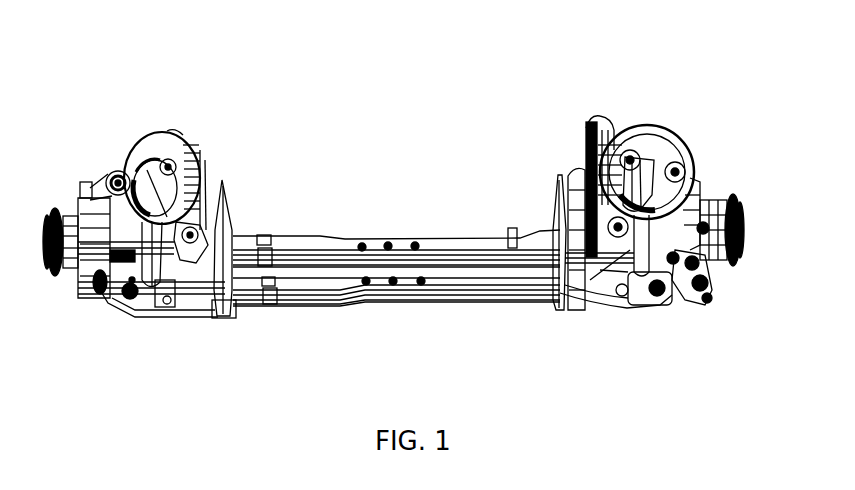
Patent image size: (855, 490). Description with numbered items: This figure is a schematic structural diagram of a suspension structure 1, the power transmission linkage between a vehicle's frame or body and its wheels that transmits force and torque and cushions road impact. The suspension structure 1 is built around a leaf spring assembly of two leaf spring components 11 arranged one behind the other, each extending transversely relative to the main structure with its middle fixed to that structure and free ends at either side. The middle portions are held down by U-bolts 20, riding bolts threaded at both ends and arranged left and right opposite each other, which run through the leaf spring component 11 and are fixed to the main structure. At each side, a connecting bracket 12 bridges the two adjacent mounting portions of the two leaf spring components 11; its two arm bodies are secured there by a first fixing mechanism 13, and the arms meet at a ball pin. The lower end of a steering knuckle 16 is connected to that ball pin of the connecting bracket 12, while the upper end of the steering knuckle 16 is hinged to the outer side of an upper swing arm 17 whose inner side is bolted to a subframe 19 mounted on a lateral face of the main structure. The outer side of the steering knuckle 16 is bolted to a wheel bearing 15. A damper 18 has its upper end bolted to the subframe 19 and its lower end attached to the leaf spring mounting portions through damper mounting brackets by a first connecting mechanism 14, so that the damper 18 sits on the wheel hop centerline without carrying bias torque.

The suspension structure 1 is at (403, 25).
The leaf spring component 11 is at (431, 236).
The connecting bracket 12 is at (683, 298).
The first fixing mechanism 13 is at (667, 302).
The first connecting mechanism 14 is at (632, 307).
The wheel bearing 15 is at (743, 227).
The steering knuckle 16 is at (710, 183).
The upper swing arm 17 is at (672, 150).
The damper 18 is at (634, 150).
The subframe 19 is at (590, 143).
The U-bolt 20 is at (558, 187).